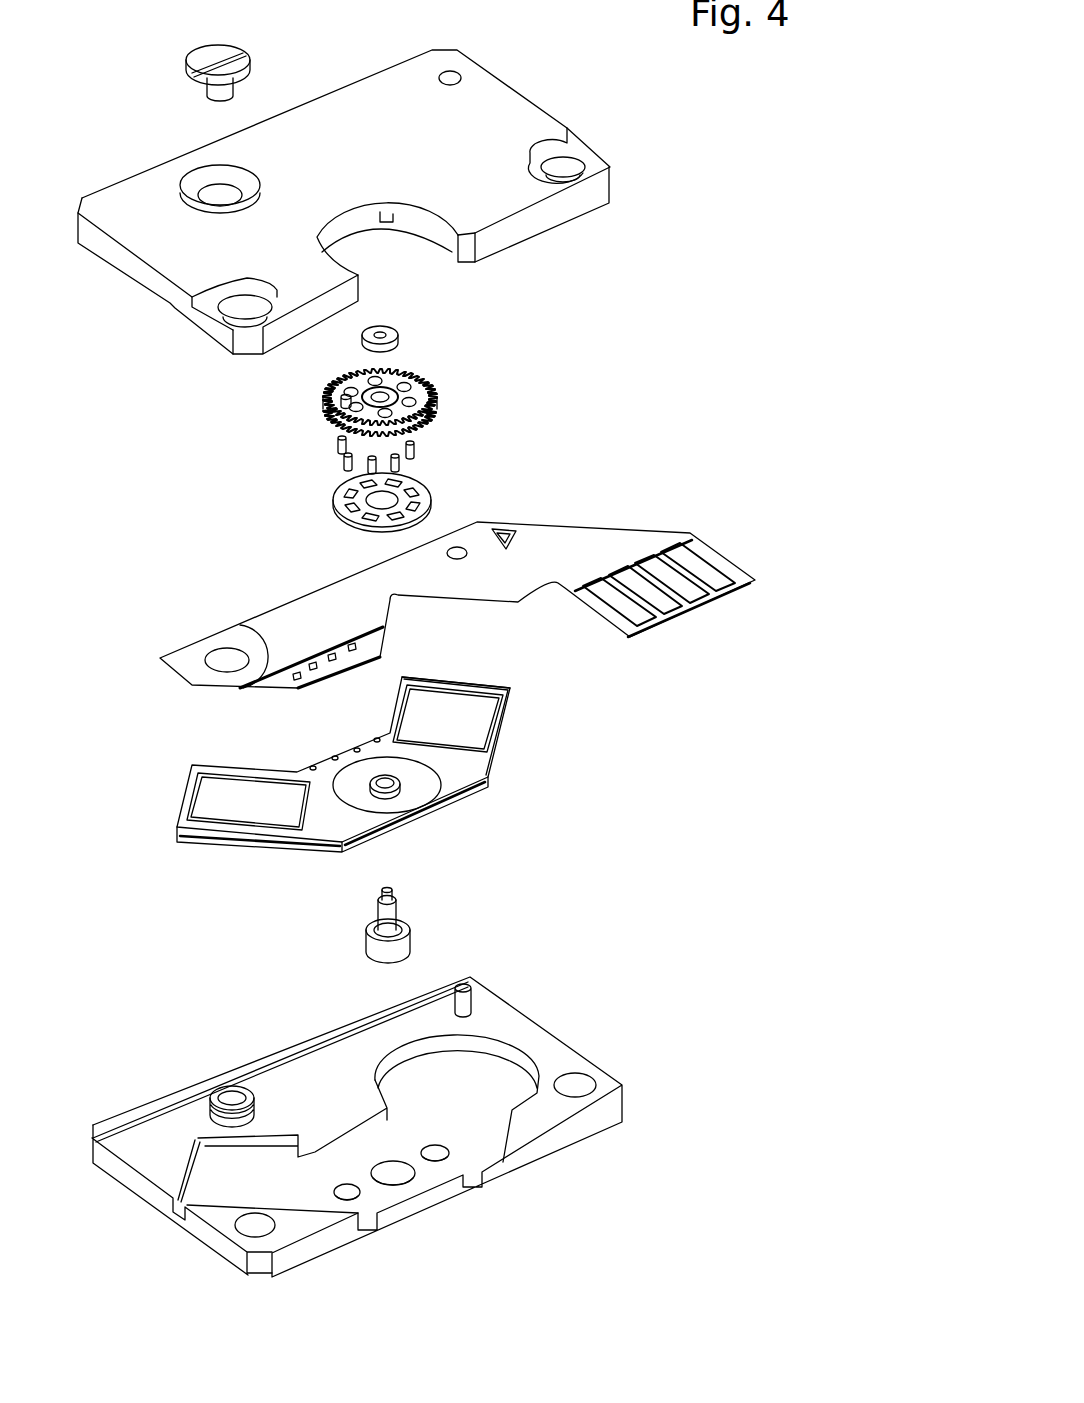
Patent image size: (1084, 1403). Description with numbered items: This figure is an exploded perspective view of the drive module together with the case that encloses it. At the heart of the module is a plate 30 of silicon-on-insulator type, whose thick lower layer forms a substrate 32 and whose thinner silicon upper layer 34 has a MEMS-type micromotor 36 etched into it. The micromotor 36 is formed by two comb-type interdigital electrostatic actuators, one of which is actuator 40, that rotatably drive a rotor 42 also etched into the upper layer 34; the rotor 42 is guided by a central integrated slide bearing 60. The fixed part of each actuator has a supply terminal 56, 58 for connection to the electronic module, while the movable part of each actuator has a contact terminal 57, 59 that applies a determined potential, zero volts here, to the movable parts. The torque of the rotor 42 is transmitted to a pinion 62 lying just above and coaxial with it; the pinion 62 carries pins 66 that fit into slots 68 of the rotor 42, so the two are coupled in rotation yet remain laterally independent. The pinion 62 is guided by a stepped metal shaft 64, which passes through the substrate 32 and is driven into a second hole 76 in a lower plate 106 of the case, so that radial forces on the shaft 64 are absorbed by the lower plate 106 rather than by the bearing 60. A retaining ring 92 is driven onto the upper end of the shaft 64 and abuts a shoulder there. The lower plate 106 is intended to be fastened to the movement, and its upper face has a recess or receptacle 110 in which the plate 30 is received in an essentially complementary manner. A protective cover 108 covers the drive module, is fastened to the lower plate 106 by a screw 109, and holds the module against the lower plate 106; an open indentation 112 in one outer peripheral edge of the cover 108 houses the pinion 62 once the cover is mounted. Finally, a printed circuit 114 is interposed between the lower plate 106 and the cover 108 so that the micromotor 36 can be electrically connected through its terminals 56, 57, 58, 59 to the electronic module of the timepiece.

The protective cover 108 is at (614, 180).
The screw 109 is at (196, 62).
The open indentation 112 is at (445, 245).
The retaining ring 92 is at (402, 330).
The pinion 62 is at (440, 407).
The pins 66 is at (344, 463).
The rotor 42 is at (431, 482).
The slots 68 is at (350, 512).
The printed circuit 114 is at (643, 530).
The micromotor 36 is at (373, 752).
The upper layer 34 is at (500, 688).
The actuator 40 is at (490, 705).
The substrate 32 is at (505, 730).
The plate 30 is at (503, 762).
The supply terminal 56 is at (310, 767).
The contact terminal 57 is at (333, 757).
The supply terminal 58 is at (377, 739).
The contact terminal 59 is at (356, 749).
The slide bearing 60 is at (400, 788).
The shaft 64 is at (411, 930).
The lower plate 106 is at (377, 1127).
The recess or receptacle 110 is at (512, 1052).
The second hole 76 is at (393, 1163).